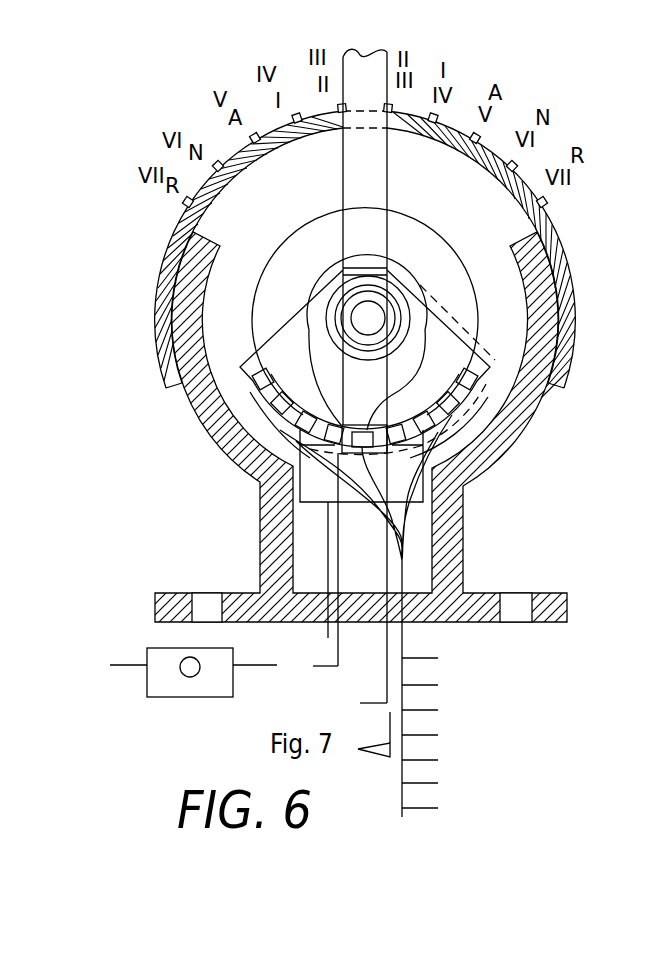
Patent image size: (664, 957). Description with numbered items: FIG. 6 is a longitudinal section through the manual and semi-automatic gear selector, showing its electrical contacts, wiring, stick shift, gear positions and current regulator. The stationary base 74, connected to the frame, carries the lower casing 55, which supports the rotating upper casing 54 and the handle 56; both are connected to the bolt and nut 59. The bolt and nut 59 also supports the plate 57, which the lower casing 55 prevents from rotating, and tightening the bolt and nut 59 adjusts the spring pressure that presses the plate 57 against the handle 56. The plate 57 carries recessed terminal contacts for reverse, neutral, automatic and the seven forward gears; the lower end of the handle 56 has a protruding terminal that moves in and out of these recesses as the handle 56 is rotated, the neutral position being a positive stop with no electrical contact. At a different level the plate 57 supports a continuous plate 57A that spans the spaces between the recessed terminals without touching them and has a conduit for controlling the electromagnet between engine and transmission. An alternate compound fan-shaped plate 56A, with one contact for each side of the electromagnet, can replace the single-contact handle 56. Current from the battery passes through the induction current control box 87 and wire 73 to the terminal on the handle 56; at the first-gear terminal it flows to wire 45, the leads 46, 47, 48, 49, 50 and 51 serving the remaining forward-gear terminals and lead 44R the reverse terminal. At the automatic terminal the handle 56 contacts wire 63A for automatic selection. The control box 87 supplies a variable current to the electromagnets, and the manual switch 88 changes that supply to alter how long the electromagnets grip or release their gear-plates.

The upper casing 54 is at (581, 316).
The lower casing 55 is at (516, 458).
The handle 56 is at (337, 200).
The compound fan shaped plate 56A is at (427, 305).
The plate 57 is at (464, 329).
The continuous plate 57A is at (477, 399).
The bolt and nut 59 is at (368, 318).
The base 74 is at (548, 592).
The reverse position lead 44R is at (328, 638).
The wire 73 is at (309, 669).
The wire 63A is at (352, 702).
The induction current control box 87 is at (181, 699).
The manual switch 88 is at (181, 674).
The wire 45 is at (444, 808).
The position II output 46 is at (447, 783).
The position III output 47 is at (450, 760).
The position IV output 48 is at (451, 735).
The position V output 49 is at (448, 710).
The position VI output 50 is at (451, 685).
The position VII output 51 is at (454, 658).